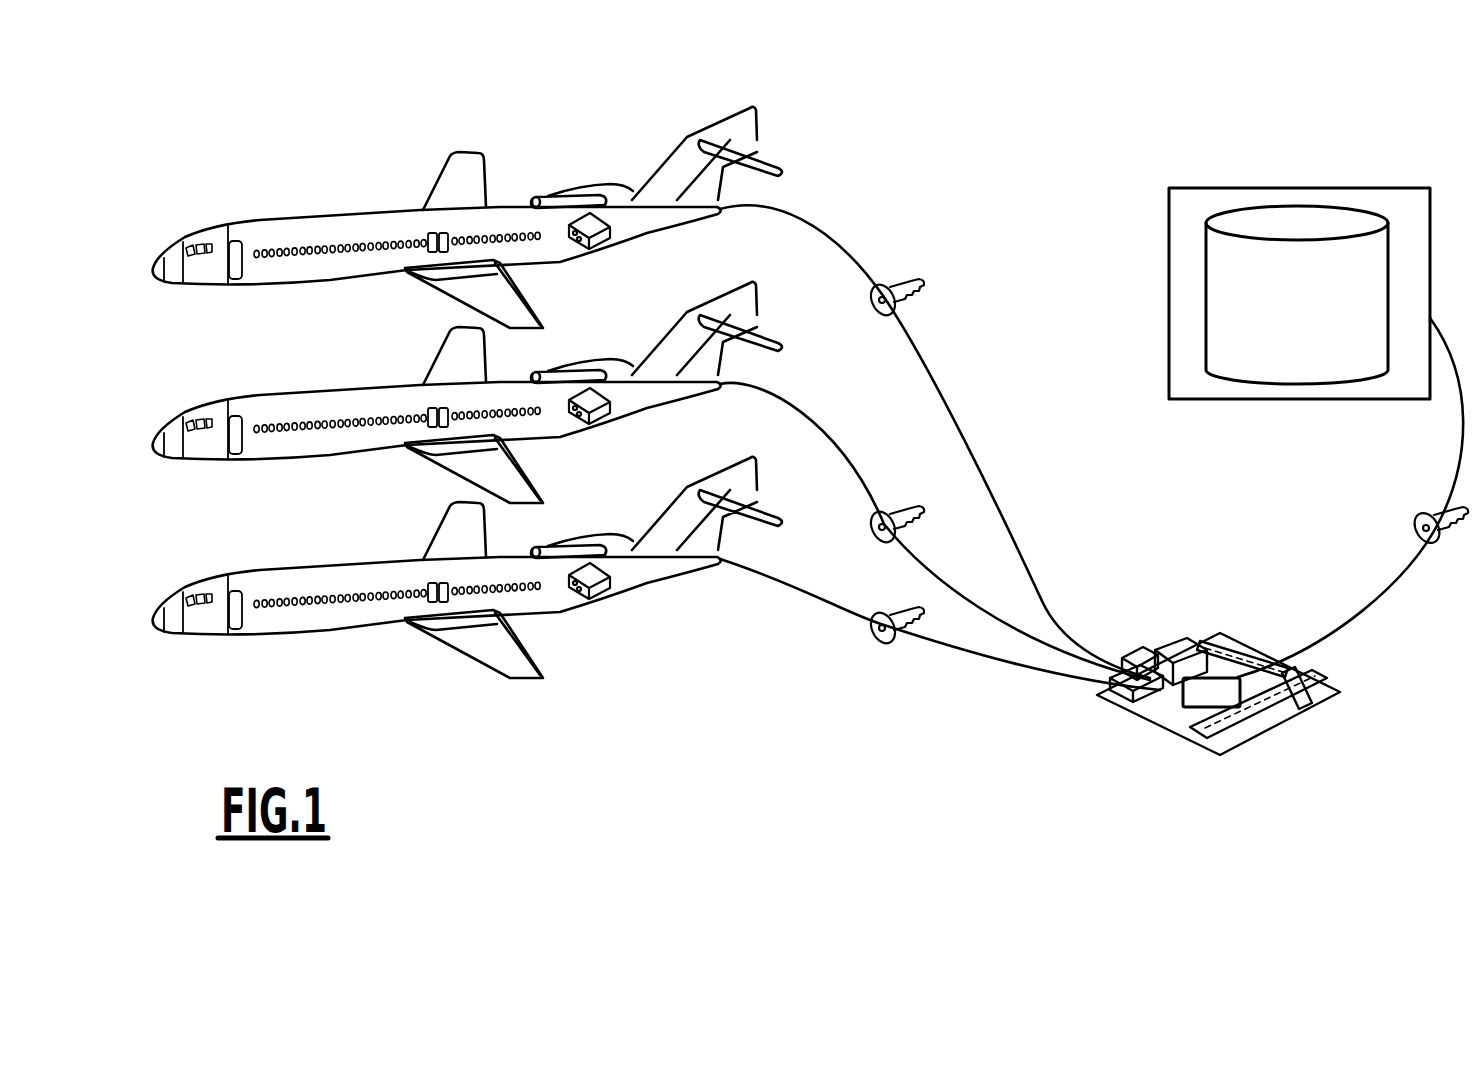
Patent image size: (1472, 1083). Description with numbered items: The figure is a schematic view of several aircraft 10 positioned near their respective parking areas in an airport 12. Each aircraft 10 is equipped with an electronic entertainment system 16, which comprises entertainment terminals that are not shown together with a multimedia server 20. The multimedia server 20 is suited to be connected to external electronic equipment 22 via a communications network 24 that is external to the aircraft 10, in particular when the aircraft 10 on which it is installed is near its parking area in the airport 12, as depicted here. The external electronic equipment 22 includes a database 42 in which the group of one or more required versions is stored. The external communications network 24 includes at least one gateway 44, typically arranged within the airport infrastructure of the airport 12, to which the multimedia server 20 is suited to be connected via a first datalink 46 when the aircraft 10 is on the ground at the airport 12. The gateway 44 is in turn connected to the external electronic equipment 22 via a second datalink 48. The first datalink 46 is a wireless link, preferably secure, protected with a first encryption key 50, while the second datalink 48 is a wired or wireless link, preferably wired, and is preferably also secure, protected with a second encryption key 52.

The aircraft 10 is at (160, 590).
The airport 12 is at (1160, 620).
The electronic entertainment system 16 is at (554, 208).
The multimedia server 20 is at (598, 240).
The external electronic equipment 22 is at (1400, 188).
The communications network 24 is at (1350, 674).
The database 42 is at (1315, 323).
The gateway 44 is at (1213, 690).
The first datalink 46 is at (1042, 598).
The second datalink 48 is at (1400, 587).
The first encryption key 50 is at (884, 612).
The second encryption key 52 is at (1424, 512).